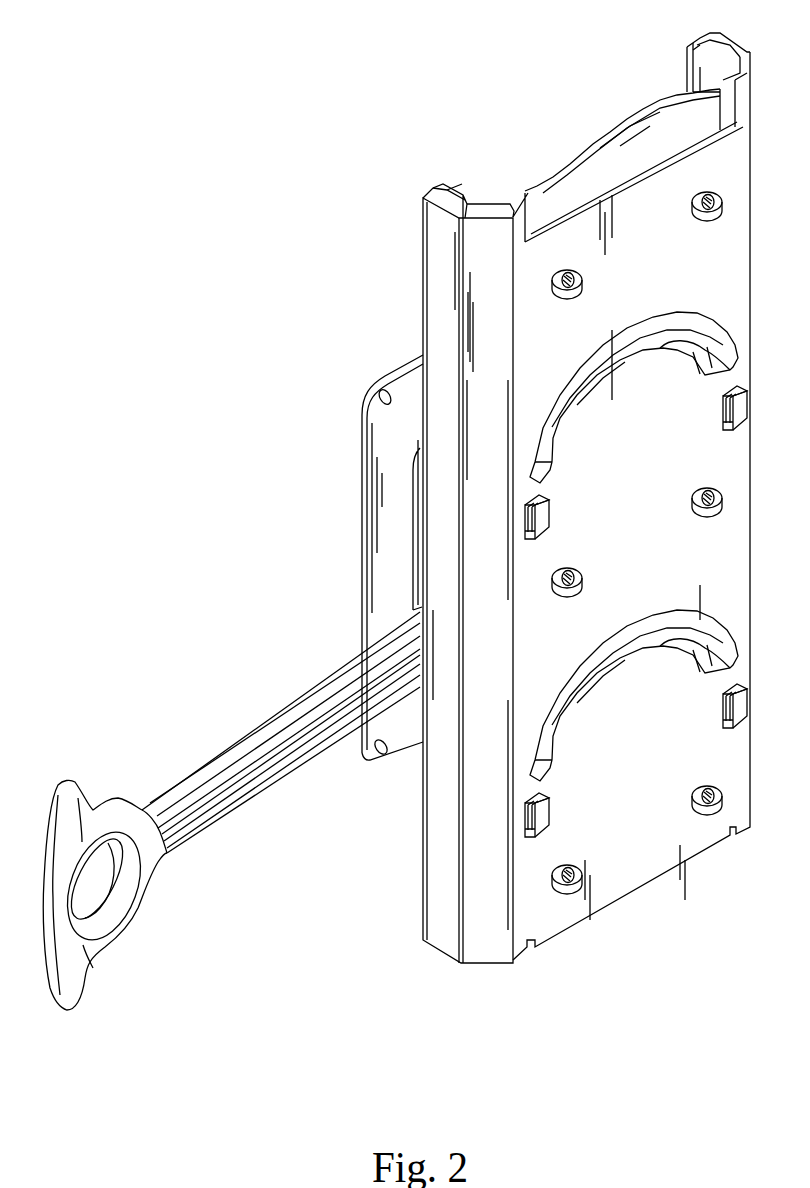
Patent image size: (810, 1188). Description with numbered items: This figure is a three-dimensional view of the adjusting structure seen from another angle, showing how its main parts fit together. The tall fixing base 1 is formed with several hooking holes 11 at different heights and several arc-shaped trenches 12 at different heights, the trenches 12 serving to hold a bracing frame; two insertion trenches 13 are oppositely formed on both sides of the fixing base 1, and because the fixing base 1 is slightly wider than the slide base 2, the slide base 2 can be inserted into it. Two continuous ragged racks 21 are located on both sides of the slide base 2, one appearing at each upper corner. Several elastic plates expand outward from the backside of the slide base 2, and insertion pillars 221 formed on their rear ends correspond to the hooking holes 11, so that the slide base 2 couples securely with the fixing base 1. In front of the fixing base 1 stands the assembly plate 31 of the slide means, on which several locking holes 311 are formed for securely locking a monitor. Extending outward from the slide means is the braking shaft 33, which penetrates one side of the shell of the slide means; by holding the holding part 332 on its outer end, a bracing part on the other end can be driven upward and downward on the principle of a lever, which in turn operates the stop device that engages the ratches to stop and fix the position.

The fixing base 1 is at (648, 872).
The hooking holes 11 is at (735, 429).
The trenches 12 is at (593, 393).
The insertion trenches 13 is at (695, 60).
The slide base 2 is at (592, 133).
The continuous ragged racks 21 is at (692, 42).
The insertion pillars 221 is at (722, 428).
The assembly plate 31 is at (369, 464).
The locking holes 311 is at (380, 392).
The braking shaft 33 is at (238, 744).
The holding part 332 is at (108, 918).